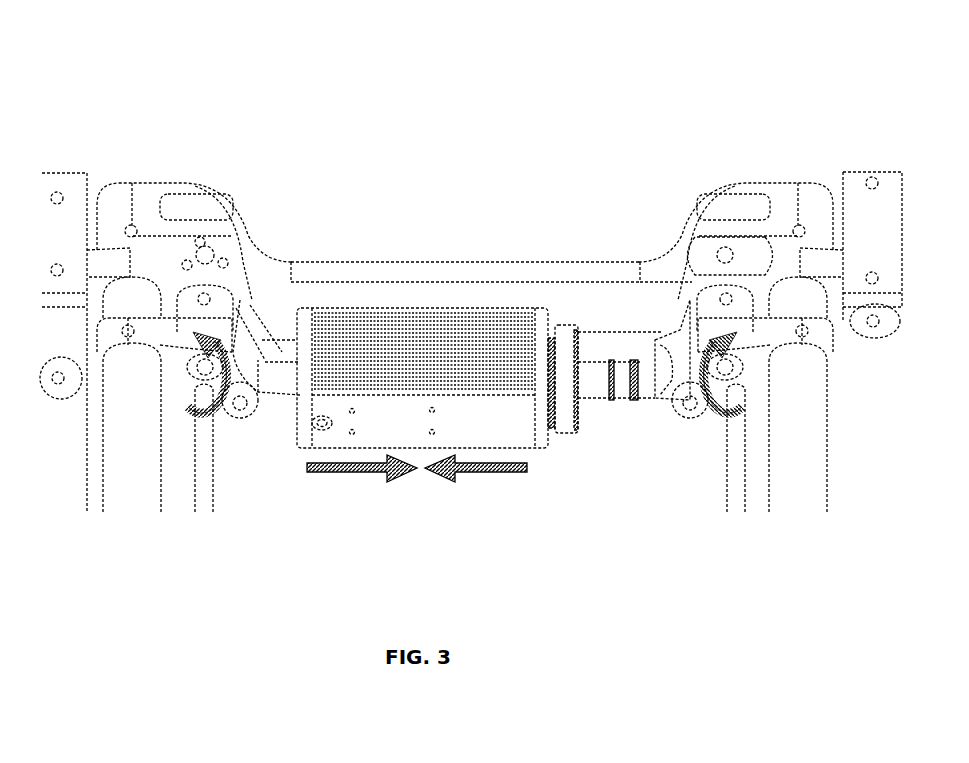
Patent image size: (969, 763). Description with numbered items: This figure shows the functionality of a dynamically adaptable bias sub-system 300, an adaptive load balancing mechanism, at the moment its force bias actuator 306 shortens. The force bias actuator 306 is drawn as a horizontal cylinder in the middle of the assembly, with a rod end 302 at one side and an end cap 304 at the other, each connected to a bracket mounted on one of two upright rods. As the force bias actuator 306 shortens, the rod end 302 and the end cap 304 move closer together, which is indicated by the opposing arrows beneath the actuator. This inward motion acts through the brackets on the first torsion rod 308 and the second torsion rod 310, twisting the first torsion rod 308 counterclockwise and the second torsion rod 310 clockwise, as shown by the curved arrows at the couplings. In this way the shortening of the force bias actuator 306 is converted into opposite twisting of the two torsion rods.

The dynamically adaptable bias sub-system 300 is at (222, 48).
The rod end 302 is at (265, 362).
The end cap 304 is at (660, 363).
The force bias actuator 306 is at (443, 340).
The first torsion rod 308 is at (205, 497).
The second torsion rod 310 is at (727, 500).